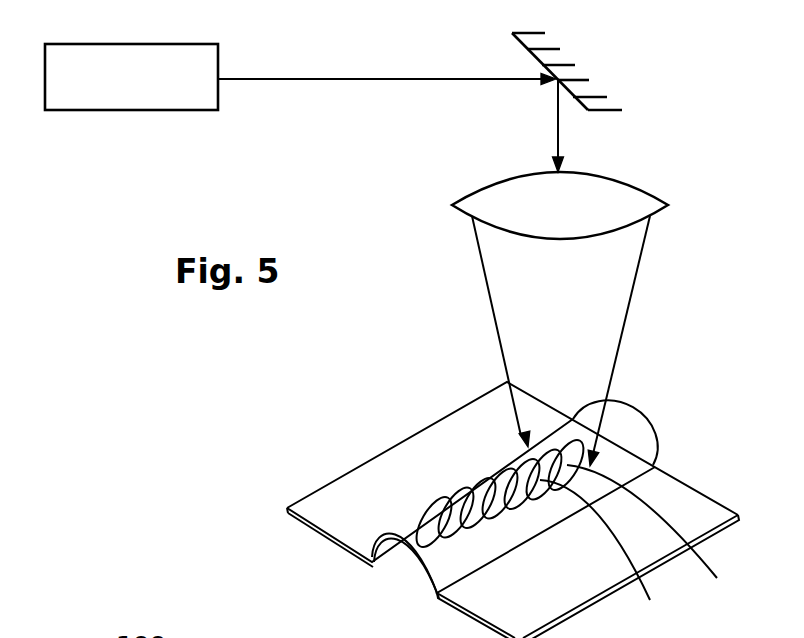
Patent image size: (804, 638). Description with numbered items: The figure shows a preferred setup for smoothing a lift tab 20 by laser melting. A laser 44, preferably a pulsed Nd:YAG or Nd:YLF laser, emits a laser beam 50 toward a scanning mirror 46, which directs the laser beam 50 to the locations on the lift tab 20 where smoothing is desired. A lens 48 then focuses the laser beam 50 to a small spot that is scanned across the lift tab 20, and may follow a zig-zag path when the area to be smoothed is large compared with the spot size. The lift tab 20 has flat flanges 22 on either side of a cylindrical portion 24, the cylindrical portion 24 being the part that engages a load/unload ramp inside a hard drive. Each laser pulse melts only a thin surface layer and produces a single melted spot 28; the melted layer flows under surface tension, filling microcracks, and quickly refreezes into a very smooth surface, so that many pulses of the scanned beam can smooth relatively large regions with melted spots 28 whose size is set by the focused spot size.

The laser 44 is at (130, 45).
The scanning mirror 46 is at (550, 47).
The lens 48 is at (474, 190).
The laser beam 50 is at (498, 327).
The lift tab 20 is at (515, 510).
The flat flanges 22 is at (443, 477).
The cylindrical portion 24 is at (627, 412).
The melted spots 28 is at (642, 549).